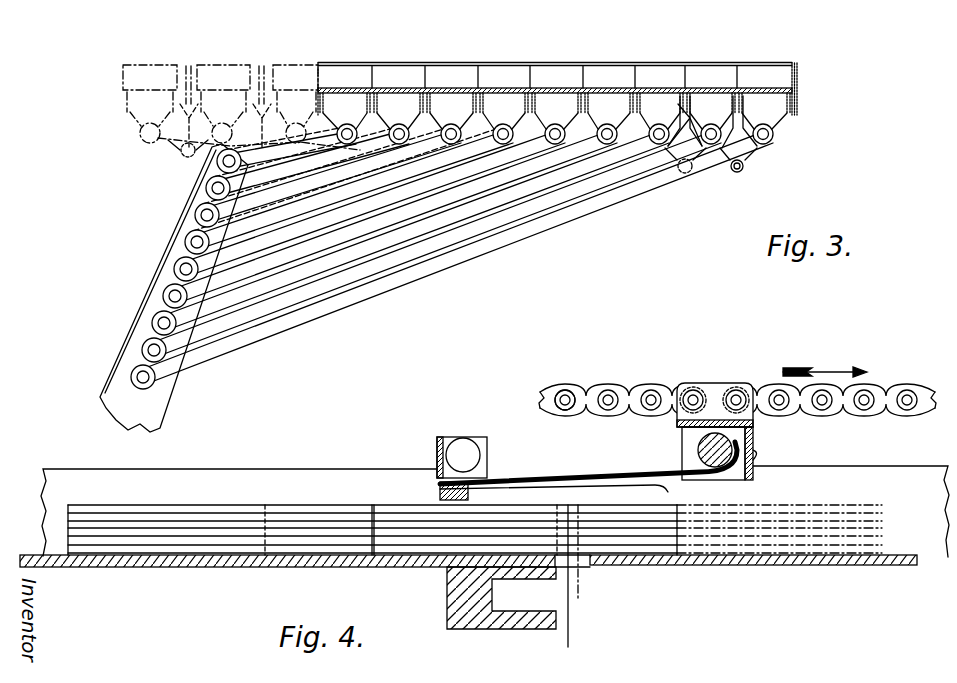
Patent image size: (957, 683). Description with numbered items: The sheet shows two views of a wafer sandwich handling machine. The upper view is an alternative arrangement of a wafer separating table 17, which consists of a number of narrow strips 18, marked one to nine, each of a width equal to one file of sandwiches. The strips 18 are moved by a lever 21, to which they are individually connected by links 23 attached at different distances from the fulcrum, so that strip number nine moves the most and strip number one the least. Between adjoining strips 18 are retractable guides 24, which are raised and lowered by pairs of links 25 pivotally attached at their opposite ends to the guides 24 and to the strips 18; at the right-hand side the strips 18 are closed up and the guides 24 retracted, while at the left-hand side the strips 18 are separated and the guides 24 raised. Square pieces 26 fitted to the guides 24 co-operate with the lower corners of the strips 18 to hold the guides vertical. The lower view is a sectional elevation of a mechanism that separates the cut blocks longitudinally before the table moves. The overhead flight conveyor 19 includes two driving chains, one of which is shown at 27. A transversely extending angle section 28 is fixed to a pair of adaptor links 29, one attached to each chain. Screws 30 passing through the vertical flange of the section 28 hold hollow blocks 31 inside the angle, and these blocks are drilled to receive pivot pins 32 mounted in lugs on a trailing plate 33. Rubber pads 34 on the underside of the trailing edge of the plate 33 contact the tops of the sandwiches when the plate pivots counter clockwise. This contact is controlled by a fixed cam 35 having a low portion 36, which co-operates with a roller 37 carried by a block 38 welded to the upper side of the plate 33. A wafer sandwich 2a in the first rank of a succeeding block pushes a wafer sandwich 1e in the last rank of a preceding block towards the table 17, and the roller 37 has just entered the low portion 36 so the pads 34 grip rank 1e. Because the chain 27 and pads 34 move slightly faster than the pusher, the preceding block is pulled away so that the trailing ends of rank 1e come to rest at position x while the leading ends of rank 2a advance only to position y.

In FIG. 3, the wafer separating table 17 is at (501, 58).
In FIG. 4, the wafer separating table 17 is at (694, 567).
In FIG. 3, the strips 18 is at (383, 94).
In FIG. 4, the overhead flight conveyor 19 is at (618, 394).
In FIG. 3, the lever 21 is at (154, 276).
In FIG. 3, the links 23 is at (347, 233).
In FIG. 3, the retractable guides 24 is at (189, 100).
In FIG. 3, the links 25 is at (188, 158).
In FIG. 3, the square pieces 26 is at (246, 115).
In FIG. 4, the driving chain 27 is at (558, 389).
In FIG. 4, the angle section 28 is at (755, 433).
In FIG. 4, the adaptor links 29 is at (714, 382).
In FIG. 4, the screws 30 is at (759, 455).
In FIG. 4, the hollow blocks 31 is at (684, 439).
In FIG. 4, the pivot pins 32 is at (699, 452).
In FIG. 4, the trailing plate 33 is at (569, 477).
In FIG. 4, the rubber pads 34 is at (440, 490).
In FIG. 4, the fixed cam 35 is at (291, 467).
In FIG. 4, the low portion 36 is at (545, 484).
In FIG. 4, the roller 37 is at (457, 433).
In FIG. 4, the block 38 is at (480, 442).
In FIG. 4, the wafer sandwich in last rank 1e is at (432, 552).
In FIG. 4, the wafer sandwich in first rank 2a is at (176, 504).
In FIG. 4, the position x is at (586, 606).
In FIG. 4, the position y is at (568, 576).